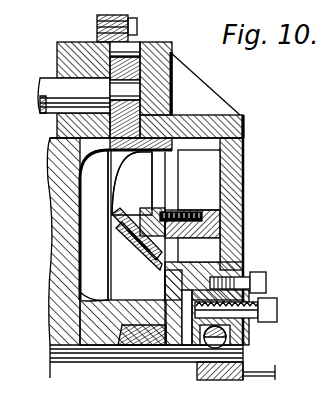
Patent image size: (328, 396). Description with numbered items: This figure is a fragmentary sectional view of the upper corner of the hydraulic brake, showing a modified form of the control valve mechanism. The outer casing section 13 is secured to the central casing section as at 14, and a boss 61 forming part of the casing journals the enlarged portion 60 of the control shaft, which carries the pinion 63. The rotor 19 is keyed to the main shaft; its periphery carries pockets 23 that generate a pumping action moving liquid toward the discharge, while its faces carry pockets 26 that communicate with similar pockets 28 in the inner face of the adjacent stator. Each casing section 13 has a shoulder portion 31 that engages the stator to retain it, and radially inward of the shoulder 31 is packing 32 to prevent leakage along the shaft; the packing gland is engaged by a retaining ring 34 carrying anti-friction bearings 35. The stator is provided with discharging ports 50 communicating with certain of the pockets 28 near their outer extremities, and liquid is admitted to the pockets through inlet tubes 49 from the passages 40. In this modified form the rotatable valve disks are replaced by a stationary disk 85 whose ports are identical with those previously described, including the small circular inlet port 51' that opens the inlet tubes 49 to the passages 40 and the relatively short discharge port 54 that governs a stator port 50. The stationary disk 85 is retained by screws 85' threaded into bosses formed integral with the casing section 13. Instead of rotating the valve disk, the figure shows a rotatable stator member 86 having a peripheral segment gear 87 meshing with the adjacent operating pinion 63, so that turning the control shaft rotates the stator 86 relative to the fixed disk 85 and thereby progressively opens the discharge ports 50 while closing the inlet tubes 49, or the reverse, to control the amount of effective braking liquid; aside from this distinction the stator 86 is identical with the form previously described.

The outer casing section 13 is at (243, 156).
The securing means 14 is at (130, 31).
The rotor 19 is at (55, 247).
The peripheral pocket 23 is at (57, 150).
The rotor pocket 26 is at (94, 225).
The stator pocket 28 is at (132, 183).
The shoulder portion 31 is at (162, 366).
The packing 32 is at (126, 348).
The retaining ring 34 is at (224, 338).
The anti-friction bearing 35 is at (232, 350).
The passage 40 is at (216, 176).
The inlet tube 49 is at (137, 245).
The discharging port 50 is at (150, 172).
The inlet port 51' is at (199, 250).
The discharge port 54 is at (180, 163).
The enlarged shaft portion 60 is at (49, 80).
The boss 61 is at (60, 48).
The pinion 63 is at (180, 58).
The stationary valve disk 85 is at (196, 187).
The retaining screw 85' is at (218, 213).
The rotatable stator member 86 is at (133, 348).
The peripheral segment gear 87 is at (174, 114).